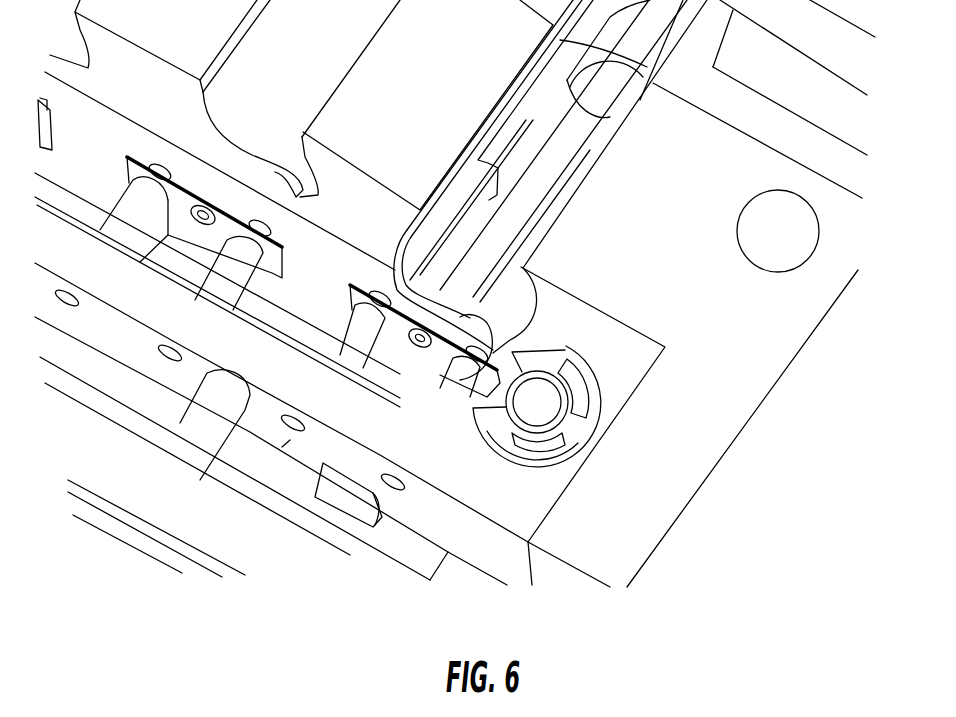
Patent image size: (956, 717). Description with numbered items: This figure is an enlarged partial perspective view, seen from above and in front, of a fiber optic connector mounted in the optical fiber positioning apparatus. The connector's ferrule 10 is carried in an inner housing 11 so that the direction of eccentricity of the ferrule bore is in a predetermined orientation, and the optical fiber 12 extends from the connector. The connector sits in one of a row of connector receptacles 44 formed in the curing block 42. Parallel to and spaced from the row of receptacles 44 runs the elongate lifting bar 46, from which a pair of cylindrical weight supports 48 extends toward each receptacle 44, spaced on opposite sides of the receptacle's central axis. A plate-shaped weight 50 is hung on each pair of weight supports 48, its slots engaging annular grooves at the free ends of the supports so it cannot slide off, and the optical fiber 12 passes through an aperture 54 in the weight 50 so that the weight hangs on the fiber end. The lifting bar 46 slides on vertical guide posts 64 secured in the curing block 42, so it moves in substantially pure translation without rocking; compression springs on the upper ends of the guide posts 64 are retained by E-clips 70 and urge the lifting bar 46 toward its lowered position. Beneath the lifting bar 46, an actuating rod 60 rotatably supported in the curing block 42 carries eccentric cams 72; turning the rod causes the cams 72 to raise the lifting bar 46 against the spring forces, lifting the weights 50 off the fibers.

The ferrule 10 is at (448, 313).
The inner housing 11 is at (500, 247).
The optical fiber 12 is at (412, 347).
The curing block 42 is at (688, 220).
The connector receptacle 44 is at (195, 108).
The lifting bar 46 is at (509, 500).
The weight supports 48 is at (217, 278).
The weight 50 is at (318, 232).
The aperture 54 is at (208, 210).
The actuating rod 60 is at (282, 447).
The guide posts 64 is at (548, 412).
The E-clips 70 is at (587, 390).
The eccentric cams 72 is at (352, 508).